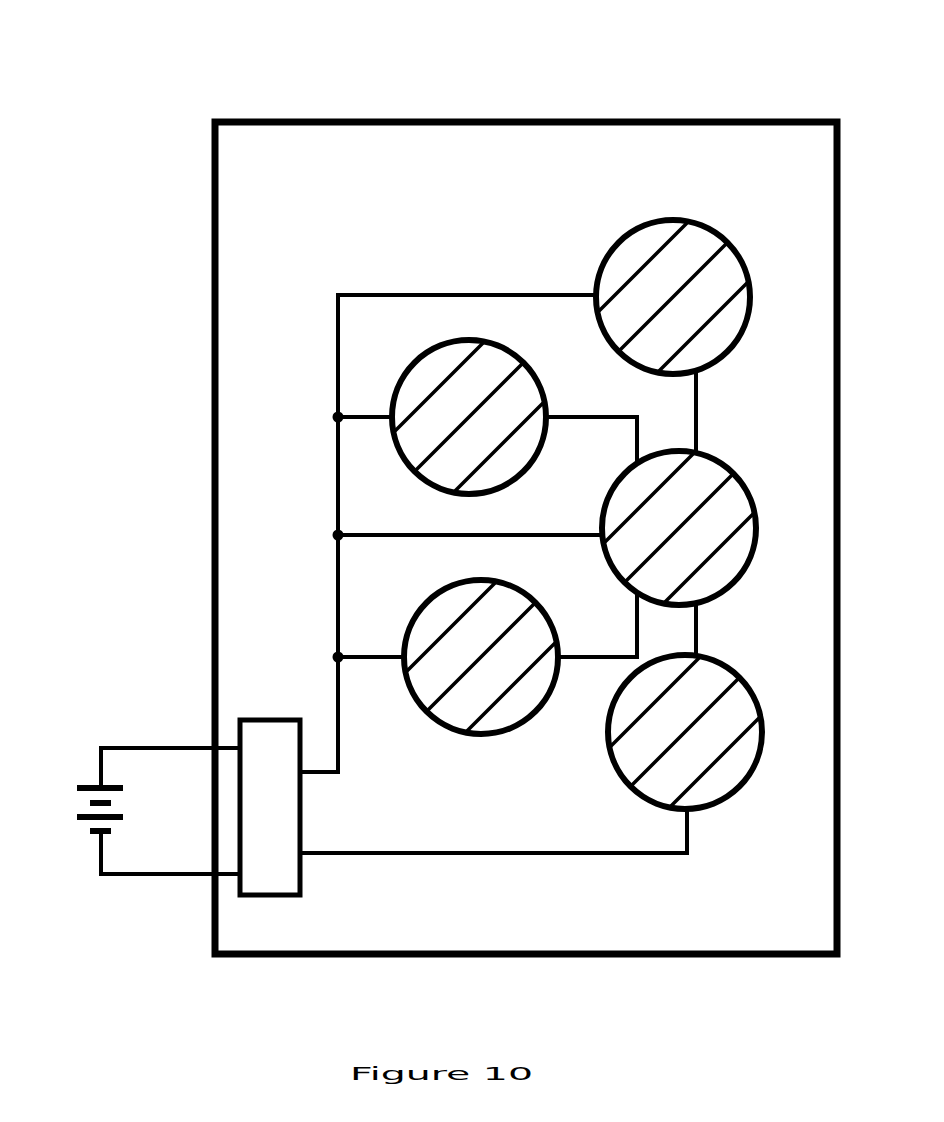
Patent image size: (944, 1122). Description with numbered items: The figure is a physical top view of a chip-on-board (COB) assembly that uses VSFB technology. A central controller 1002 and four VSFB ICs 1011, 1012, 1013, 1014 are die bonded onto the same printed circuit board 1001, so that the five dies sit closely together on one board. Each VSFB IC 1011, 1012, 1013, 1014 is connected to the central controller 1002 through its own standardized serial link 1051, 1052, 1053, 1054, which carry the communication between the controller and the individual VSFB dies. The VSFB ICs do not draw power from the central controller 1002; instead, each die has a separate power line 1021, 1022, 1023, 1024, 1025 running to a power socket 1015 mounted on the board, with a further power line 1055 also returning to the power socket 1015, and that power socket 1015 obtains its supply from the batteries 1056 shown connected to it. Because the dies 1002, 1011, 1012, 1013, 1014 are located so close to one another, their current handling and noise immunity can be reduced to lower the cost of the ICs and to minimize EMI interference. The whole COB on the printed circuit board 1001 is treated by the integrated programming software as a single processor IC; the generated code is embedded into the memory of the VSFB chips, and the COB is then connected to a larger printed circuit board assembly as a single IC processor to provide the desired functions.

The printed circuit board 1001 is at (663, 140).
The central controller 1002 is at (702, 528).
The VSFB IC 1011 is at (705, 248).
The VSFB IC 1012 is at (688, 753).
The VSFB IC 1013 is at (493, 367).
The VSFB IC 1014 is at (494, 683).
The power socket 1015 is at (262, 878).
The power line 1021 is at (407, 295).
The power line 1022 is at (365, 412).
The power line 1023 is at (393, 533).
The power line 1024 is at (375, 655).
The power line 1025 is at (345, 850).
The standardized serial link 1051 is at (593, 412).
The standardized serial link 1052 is at (700, 418).
The standardized serial link 1053 is at (602, 655).
The standardized serial link 1054 is at (705, 614).
The power line 1055 is at (508, 855).
The batteries 1056 is at (85, 805).